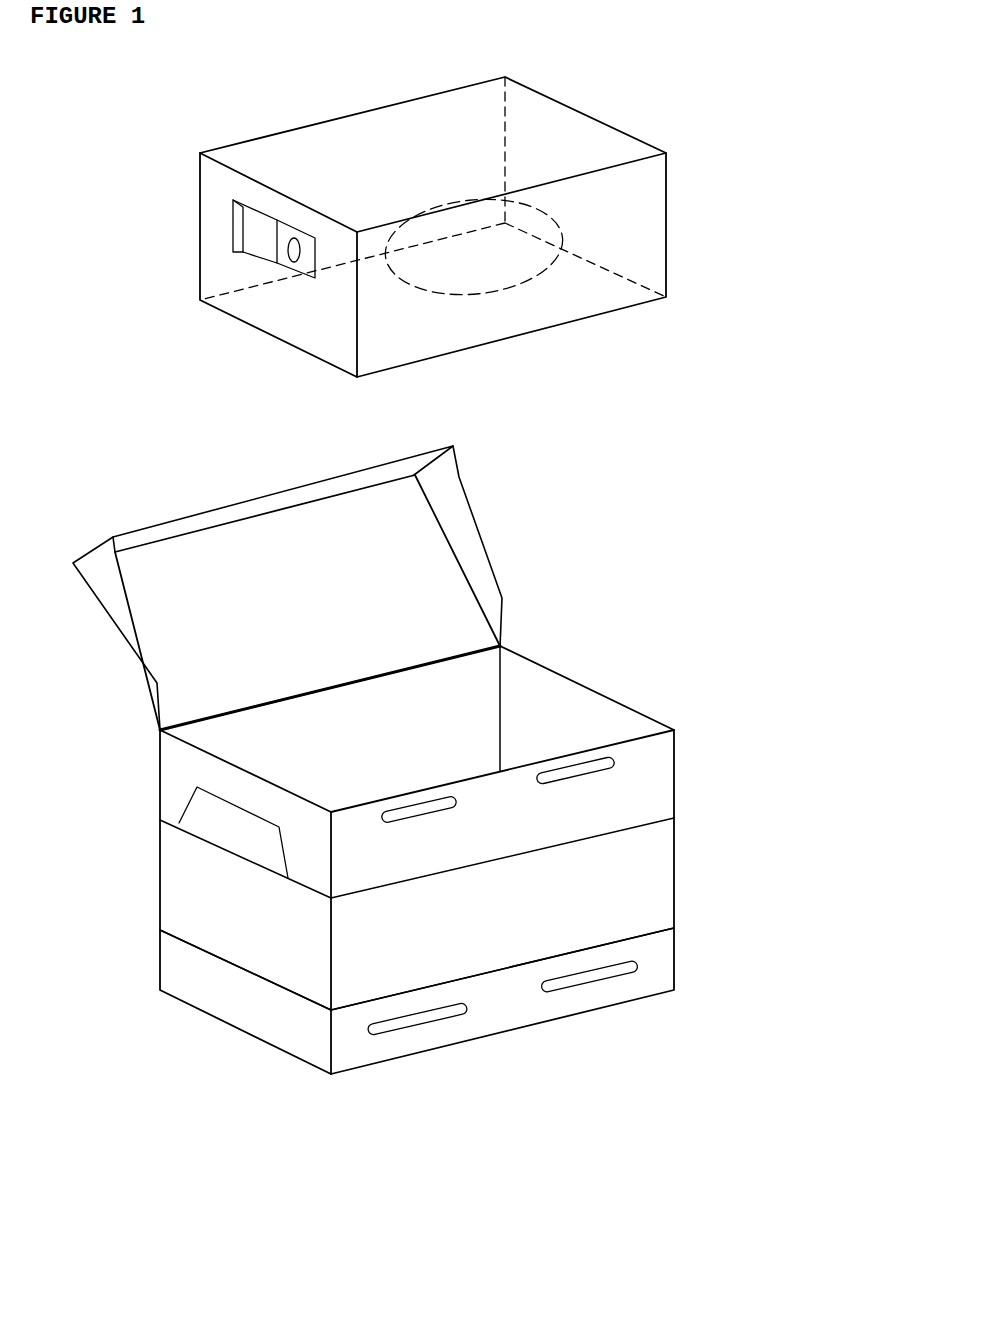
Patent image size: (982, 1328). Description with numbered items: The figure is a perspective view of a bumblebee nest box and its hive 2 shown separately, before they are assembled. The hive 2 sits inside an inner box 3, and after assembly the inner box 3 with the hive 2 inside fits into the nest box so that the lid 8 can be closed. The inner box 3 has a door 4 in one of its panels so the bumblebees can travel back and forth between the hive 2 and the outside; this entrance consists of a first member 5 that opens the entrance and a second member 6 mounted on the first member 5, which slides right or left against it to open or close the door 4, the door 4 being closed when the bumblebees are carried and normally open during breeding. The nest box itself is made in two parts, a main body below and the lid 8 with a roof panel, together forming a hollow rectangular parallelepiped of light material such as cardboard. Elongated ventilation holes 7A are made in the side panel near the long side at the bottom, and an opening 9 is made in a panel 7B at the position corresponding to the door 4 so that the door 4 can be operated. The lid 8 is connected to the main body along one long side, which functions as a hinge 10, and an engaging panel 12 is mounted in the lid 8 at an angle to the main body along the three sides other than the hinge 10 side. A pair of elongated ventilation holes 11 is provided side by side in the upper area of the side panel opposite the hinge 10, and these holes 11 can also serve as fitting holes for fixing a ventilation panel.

The hive 2 is at (547, 273).
The inner box 3 is at (632, 218).
The door 4 is at (285, 250).
The first member 5 is at (292, 278).
The second member 6 is at (257, 230).
The elongated ventilation holes 7A is at (427, 1018).
The panel 7B is at (236, 917).
The lid 8 is at (400, 606).
The opening 9 is at (215, 822).
The hinge 10 is at (215, 717).
The elongated ventilation holes 11 is at (427, 806).
The engaging panel 12 is at (182, 527).